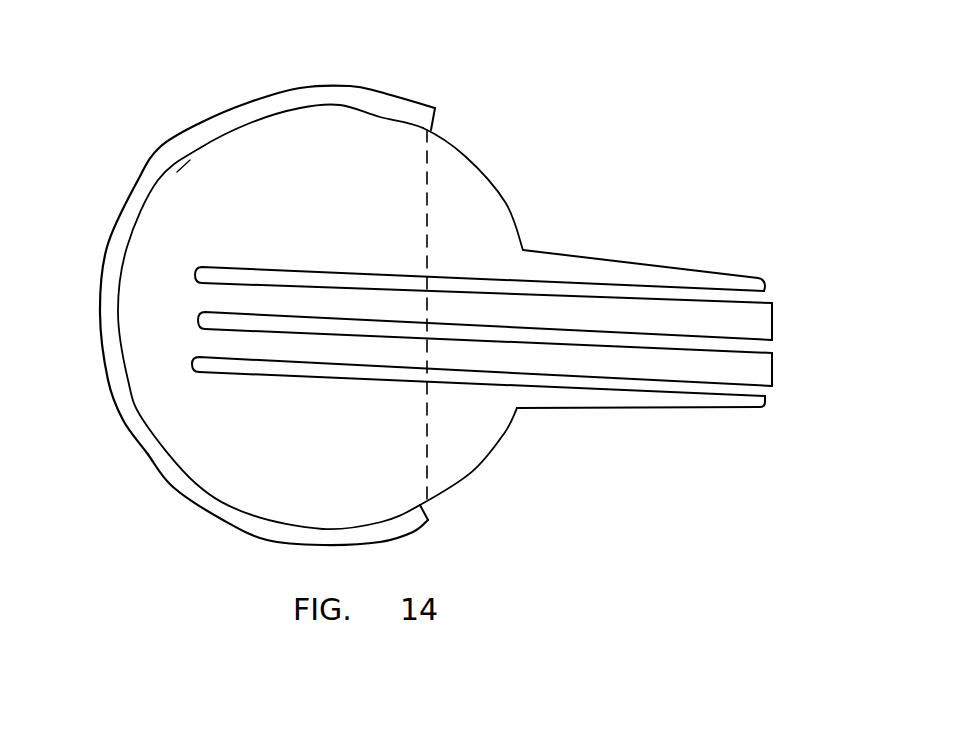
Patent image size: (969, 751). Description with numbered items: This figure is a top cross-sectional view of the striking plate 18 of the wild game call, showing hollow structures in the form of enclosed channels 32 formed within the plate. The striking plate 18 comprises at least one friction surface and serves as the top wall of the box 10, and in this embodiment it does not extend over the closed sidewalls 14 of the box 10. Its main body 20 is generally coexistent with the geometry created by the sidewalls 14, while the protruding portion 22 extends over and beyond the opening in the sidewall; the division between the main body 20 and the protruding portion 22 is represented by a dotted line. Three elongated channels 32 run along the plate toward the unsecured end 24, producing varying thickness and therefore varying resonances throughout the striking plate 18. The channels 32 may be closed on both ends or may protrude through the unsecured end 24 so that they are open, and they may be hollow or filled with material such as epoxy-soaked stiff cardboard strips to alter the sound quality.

The box 10 is at (148, 188).
The sidewalls 14 is at (316, 95).
The striking plate 18 is at (468, 185).
The main body 20 is at (245, 449).
The protruding portion 22 is at (478, 455).
The unsecured end 24 is at (778, 330).
The channels 32 is at (555, 290).